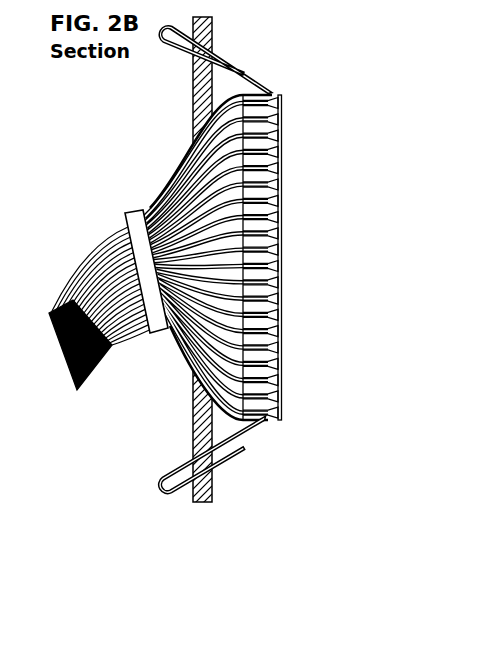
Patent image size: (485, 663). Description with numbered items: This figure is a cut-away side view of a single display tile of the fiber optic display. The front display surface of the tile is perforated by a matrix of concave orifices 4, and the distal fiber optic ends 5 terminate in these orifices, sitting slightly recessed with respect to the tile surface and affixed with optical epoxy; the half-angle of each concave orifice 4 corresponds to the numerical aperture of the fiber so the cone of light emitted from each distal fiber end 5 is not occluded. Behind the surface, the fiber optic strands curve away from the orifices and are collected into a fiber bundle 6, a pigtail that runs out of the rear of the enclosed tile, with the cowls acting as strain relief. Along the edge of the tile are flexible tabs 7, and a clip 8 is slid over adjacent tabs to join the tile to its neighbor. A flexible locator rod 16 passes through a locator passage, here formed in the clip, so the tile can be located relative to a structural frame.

The concave orifices 4 is at (279, 169).
The distal fiber optic ends 5 is at (298, 102).
The fiber bundle 6 is at (92, 387).
The tabs 7 is at (260, 68).
The clip 8 is at (175, 513).
The locator rods 16 is at (186, 90).